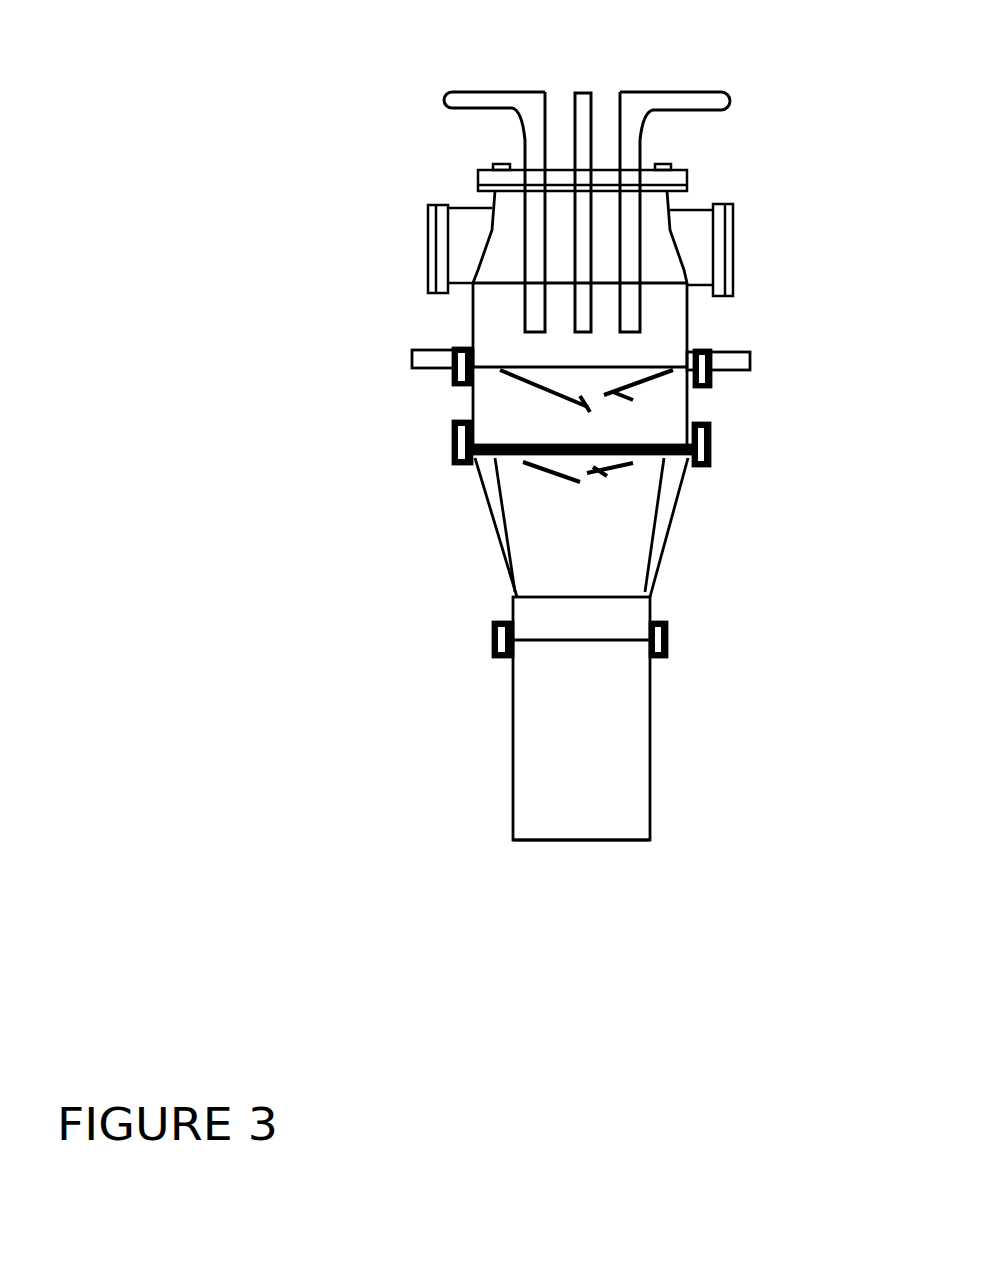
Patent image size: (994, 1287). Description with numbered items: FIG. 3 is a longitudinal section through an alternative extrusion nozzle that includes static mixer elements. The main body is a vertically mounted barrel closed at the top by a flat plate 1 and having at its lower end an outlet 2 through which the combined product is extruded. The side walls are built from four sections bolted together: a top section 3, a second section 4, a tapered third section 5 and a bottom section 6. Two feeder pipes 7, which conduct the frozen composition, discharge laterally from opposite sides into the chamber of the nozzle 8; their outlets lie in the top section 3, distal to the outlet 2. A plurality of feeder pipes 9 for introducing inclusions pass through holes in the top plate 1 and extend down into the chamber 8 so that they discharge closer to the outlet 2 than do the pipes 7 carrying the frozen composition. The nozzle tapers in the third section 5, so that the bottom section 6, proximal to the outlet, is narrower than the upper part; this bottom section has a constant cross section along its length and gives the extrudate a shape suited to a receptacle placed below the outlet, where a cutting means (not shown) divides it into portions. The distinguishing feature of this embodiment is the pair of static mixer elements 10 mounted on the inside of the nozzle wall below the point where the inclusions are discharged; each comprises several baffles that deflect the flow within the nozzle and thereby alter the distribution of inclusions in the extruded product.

The flat plate 1 is at (690, 192).
The outlet 2 is at (598, 840).
The top section 3 is at (690, 318).
The second section 4 is at (690, 405).
The third section 5 is at (674, 515).
The bottom section 6 is at (650, 717).
The feeder pipes 7 is at (440, 240).
The chamber of the nozzle 8 is at (580, 527).
The feeder pipes 9 is at (627, 153).
The static mixer elements 10 is at (455, 425).